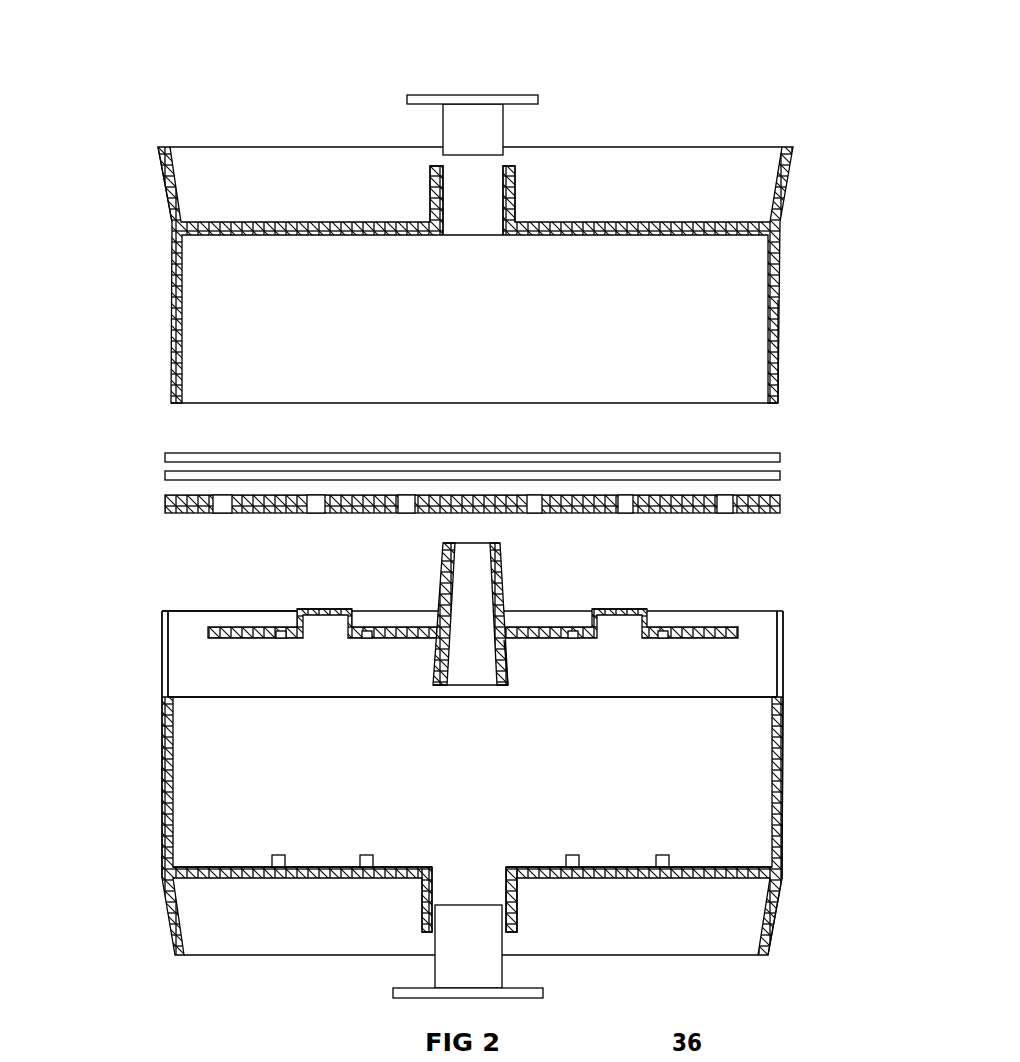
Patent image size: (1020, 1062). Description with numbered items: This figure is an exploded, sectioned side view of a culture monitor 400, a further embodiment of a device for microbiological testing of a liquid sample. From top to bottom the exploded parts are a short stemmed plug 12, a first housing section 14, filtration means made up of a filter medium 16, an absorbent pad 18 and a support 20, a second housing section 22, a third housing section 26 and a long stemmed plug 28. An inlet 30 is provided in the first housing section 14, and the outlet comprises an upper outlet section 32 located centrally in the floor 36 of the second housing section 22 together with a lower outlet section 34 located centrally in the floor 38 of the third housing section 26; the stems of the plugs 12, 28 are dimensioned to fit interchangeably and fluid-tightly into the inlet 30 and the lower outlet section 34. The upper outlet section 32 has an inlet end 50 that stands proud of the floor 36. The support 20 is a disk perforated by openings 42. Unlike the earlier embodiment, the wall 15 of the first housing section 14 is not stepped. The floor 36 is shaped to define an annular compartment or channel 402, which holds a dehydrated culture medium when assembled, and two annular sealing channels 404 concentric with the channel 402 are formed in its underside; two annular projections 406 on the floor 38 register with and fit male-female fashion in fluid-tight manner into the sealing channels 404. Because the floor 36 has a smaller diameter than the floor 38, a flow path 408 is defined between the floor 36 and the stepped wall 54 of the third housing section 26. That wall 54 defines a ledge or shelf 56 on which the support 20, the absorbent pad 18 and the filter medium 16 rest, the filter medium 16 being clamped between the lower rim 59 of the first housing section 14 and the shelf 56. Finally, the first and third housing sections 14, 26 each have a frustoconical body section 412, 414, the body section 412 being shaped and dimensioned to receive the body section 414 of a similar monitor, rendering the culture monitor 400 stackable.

The short stemmed plug 12 is at (476, 97).
The first housing section 14 is at (792, 218).
The stepped wall 15 is at (770, 298).
The filter medium 16 is at (772, 448).
The absorbent pad 18 is at (785, 473).
The support 20 is at (790, 500).
The second housing section 22 is at (756, 628).
The third housing section 26 is at (790, 737).
The long stemmed plug 28 is at (506, 970).
The inlet 30 is at (470, 208).
The upper outlet section 32 is at (508, 673).
The lower outlet section 34 is at (519, 901).
The floor 36 is at (730, 612).
The floor 38 is at (723, 861).
The openings 42 is at (622, 511).
The inlet end 50 is at (472, 540).
The stepped wall 54 is at (166, 790).
The ledge or shelf 56 is at (170, 696).
The lower rim 59 is at (170, 407).
The culture monitor 400 is at (652, 100).
The annular compartment or channel 402 is at (322, 641).
The annular sealing channels 404 is at (281, 646).
The annular projections 406 is at (362, 852).
The flow path 408 is at (190, 636).
The frustoconical body section 412 is at (158, 182).
The frustoconical body section 414 is at (768, 912).